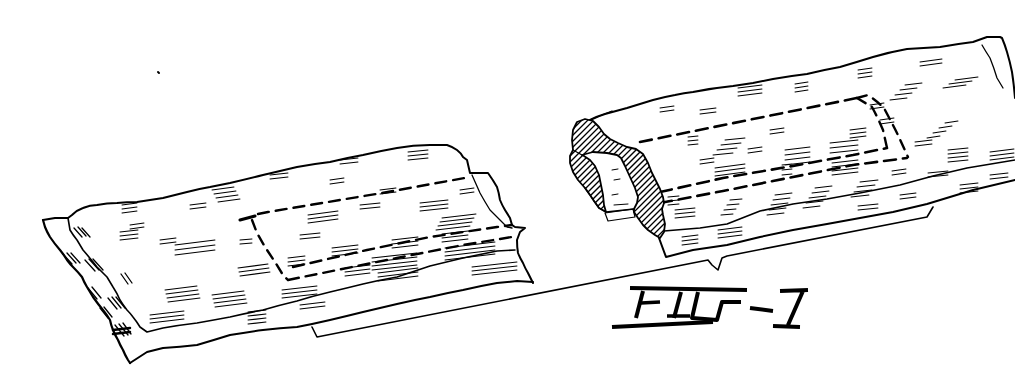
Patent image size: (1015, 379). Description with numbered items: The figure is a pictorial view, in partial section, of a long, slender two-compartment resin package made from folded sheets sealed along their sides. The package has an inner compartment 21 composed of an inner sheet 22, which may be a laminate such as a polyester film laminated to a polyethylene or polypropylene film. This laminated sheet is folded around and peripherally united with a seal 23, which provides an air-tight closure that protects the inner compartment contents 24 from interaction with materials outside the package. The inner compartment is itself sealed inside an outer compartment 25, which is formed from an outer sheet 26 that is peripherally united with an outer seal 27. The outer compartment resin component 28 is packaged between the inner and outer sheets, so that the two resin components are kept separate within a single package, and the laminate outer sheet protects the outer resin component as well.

The inner compartment 21 is at (571, 150).
The inner sheet 22 is at (593, 203).
The seal 23 is at (617, 220).
The inner compartment contents 24 is at (578, 182).
The outer compartment 25 is at (697, 92).
The outer sheet 26 is at (603, 113).
The outer seal 27 is at (44, 218).
The outer compartment resin component 28 is at (576, 122).